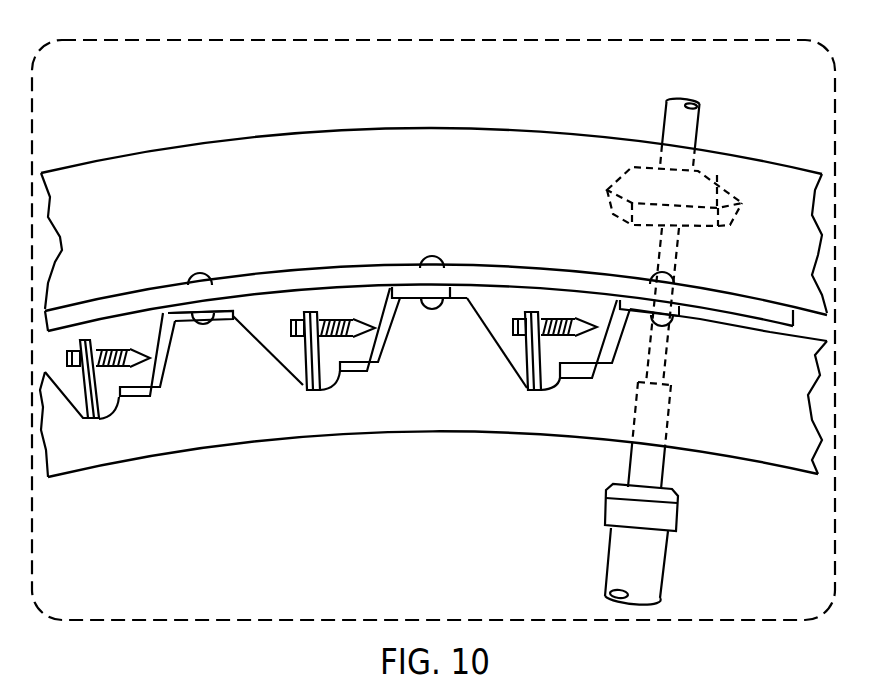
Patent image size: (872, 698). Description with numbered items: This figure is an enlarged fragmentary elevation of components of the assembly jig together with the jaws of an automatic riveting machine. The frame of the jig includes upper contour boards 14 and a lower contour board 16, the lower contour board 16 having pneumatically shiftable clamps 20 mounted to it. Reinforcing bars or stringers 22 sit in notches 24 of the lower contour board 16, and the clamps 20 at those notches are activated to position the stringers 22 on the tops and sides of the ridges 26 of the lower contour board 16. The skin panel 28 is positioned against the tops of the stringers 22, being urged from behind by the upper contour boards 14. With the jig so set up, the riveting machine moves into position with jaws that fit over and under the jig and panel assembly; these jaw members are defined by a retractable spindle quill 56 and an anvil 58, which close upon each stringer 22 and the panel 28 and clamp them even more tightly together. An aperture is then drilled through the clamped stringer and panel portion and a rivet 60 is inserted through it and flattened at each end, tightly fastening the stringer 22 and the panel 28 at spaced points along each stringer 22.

The upper contour boards 14 is at (393, 188).
The lower contour board 16 is at (378, 416).
The pneumatically shiftable clamps 20 is at (294, 372).
The stringers 22 is at (162, 330).
The notches 24 is at (291, 357).
The ridges 26 is at (230, 322).
The skin panel 28 is at (492, 278).
The retractable spindle quill 56 is at (672, 123).
The anvil 58 is at (650, 575).
The rivet 60 is at (673, 318).